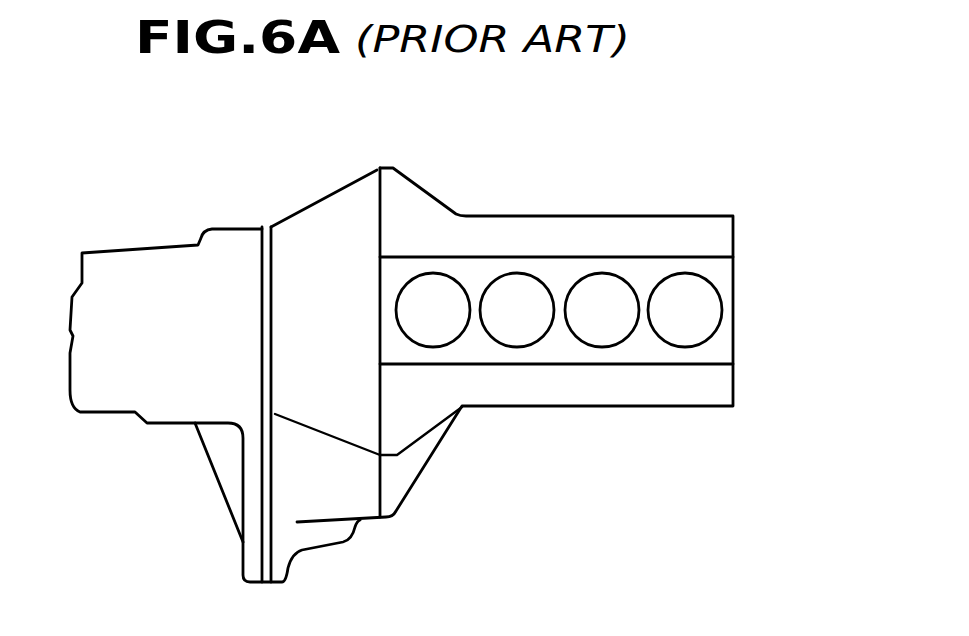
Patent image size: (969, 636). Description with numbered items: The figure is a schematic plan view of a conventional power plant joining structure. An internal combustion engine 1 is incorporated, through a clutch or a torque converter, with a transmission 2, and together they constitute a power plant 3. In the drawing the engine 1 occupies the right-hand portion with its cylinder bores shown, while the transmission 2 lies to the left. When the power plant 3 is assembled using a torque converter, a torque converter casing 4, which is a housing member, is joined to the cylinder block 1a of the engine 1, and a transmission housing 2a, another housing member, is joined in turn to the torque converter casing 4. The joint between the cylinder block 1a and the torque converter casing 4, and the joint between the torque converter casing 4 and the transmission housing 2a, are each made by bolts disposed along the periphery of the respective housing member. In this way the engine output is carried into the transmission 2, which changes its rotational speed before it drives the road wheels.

The internal combustion engine 1 is at (567, 216).
The cylinder block 1a is at (408, 430).
The transmission 2 is at (168, 244).
The transmission housing 2a is at (230, 407).
The power plant 3 is at (497, 176).
The torque converter casing 4 is at (308, 223).